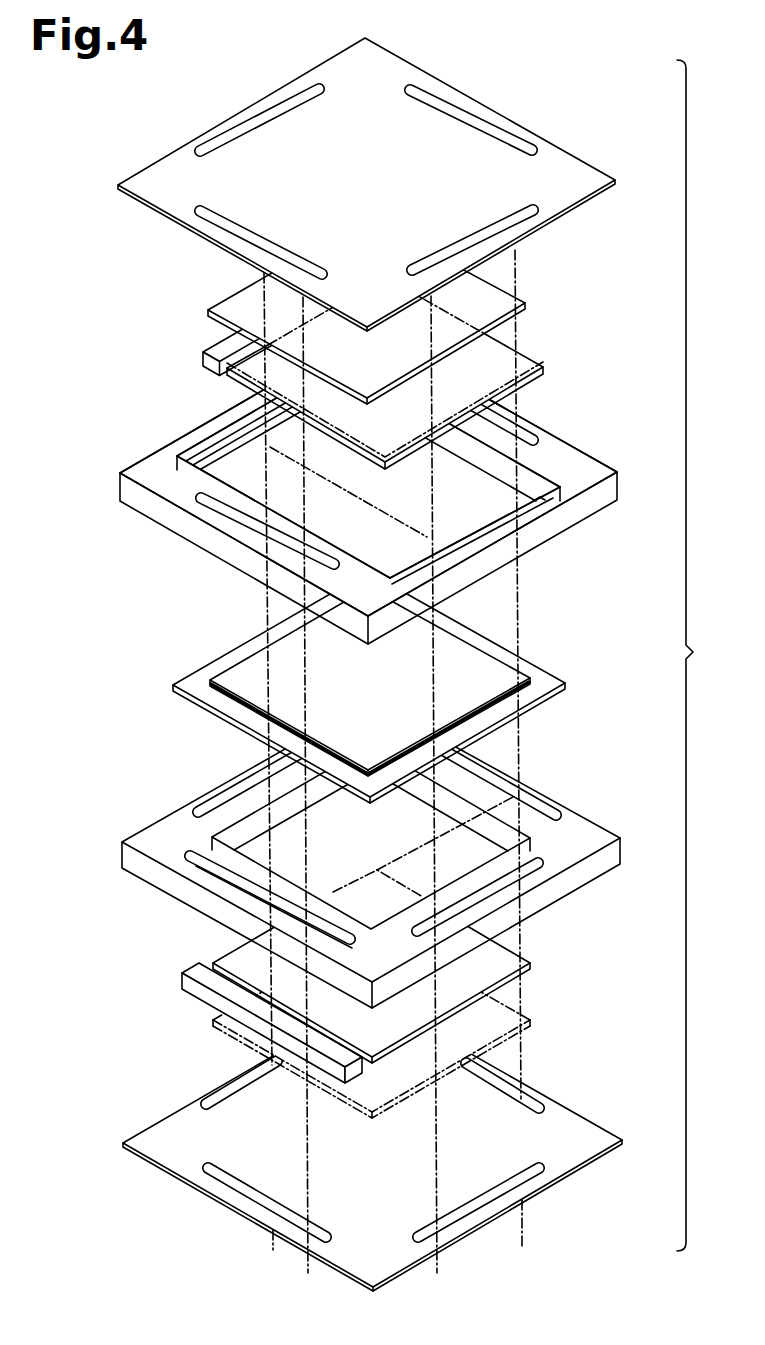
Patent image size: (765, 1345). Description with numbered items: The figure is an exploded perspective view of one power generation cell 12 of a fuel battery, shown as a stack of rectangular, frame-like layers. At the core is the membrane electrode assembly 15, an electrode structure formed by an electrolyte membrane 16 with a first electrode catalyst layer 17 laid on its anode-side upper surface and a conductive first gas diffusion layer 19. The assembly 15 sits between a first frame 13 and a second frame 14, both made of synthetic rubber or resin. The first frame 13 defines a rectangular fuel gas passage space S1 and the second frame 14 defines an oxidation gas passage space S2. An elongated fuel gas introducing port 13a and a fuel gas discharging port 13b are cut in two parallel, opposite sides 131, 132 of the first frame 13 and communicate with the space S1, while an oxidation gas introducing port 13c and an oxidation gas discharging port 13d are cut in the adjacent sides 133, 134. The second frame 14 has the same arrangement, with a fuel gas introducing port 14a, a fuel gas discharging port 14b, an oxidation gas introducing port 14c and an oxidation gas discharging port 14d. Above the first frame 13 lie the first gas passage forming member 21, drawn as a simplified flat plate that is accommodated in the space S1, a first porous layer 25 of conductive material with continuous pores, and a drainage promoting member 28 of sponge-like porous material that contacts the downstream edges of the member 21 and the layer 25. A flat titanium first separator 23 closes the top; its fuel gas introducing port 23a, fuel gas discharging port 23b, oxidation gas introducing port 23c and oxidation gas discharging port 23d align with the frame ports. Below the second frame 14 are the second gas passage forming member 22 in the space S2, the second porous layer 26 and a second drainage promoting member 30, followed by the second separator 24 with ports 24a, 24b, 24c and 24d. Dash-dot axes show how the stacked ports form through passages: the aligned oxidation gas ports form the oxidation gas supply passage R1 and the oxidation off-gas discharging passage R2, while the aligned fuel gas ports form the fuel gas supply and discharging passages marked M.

The power generation cell 12 is at (704, 655).
The first frame 13 is at (386, 487).
The fuel gas introducing port 13a is at (543, 500).
The fuel gas discharging port 13b is at (250, 443).
The oxidation gas introducing port 13c is at (522, 433).
The oxidation gas discharging port 13d is at (233, 521).
The side of first frame 131 is at (527, 538).
The side of first frame 132 is at (200, 430).
The side of first frame 133 is at (565, 447).
The side of first frame 134 is at (232, 552).
The second frame 14 is at (597, 822).
The fuel gas introducing port 14a is at (473, 903).
The fuel gas discharging port 14b is at (243, 787).
The oxidation gas introducing port 14c is at (543, 813).
The oxidation gas discharging port 14d is at (223, 876).
The membrane electrode assembly 15 is at (386, 687).
The electrolyte membrane 16 is at (535, 670).
The first electrode catalyst layer 17 is at (477, 715).
The first gas diffusion layer 19 is at (477, 690).
The first gas passage forming member 21 is at (525, 360).
The second gas passage forming member 22 is at (237, 955).
The first separator 23 is at (563, 146).
The fuel gas introducing port 23a is at (524, 218).
The fuel gas discharging port 23b is at (238, 133).
The oxidation gas introducing port 23c is at (457, 108).
The oxidation gas discharging port 23d is at (257, 248).
The second separator 24 is at (570, 1105).
The fuel gas introducing port 24a is at (520, 1182).
The fuel gas discharging port 24b is at (225, 1104).
The oxidation gas introducing port 24c is at (531, 1106).
The oxidation gas discharging port 24d is at (263, 1207).
The first porous layer 25 is at (233, 303).
The second porous layer 26 is at (205, 1017).
The drainage promoting member 28 is at (213, 343).
The second drainage promoting member 30 is at (180, 980).
The fuel gas passage space S1 is at (350, 497).
The oxidation gas passage space S2 is at (413, 862).
The direction of movement M is at (264, 112).
The oxidation gas supply passage R1 is at (513, 147).
The oxidation gas discharging passage R2 is at (302, 250).